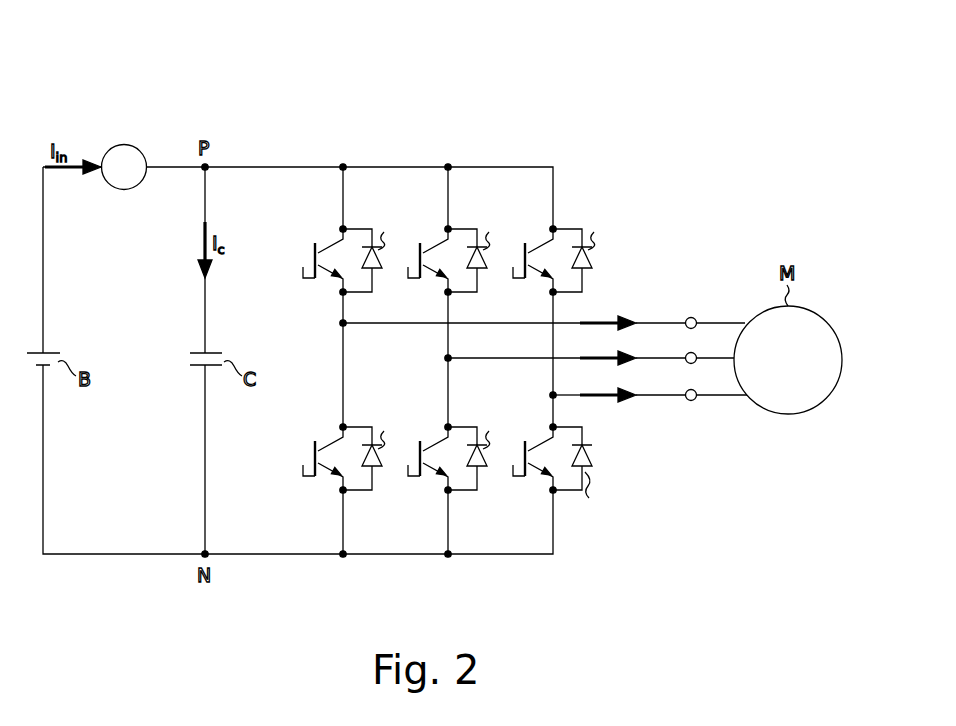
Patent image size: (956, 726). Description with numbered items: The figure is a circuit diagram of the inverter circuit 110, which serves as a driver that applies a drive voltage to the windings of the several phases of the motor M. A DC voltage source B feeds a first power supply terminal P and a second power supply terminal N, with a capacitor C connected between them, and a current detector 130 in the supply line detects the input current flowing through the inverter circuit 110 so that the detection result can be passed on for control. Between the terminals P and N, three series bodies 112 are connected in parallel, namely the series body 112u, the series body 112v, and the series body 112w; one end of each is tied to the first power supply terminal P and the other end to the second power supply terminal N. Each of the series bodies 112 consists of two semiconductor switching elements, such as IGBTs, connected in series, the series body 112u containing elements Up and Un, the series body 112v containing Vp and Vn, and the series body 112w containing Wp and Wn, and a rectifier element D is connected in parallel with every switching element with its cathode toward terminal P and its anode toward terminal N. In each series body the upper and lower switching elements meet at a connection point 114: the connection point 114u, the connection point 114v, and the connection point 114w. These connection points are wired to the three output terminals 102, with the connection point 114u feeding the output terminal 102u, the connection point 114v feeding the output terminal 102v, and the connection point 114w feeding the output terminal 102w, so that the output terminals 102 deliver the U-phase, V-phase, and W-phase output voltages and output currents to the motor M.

The inverter circuit 110 is at (574, 76).
The current detector 130 is at (124, 144).
The series bodies 112 is at (463, 194).
The series body 112u is at (346, 220).
The series body 112v is at (453, 222).
The series body 112w is at (558, 220).
The connection point 114 is at (469, 415).
The connection point 114u is at (340, 323).
The connection point 114v is at (447, 360).
The connection point 114w is at (558, 398).
The output terminals 102 is at (724, 370).
The output terminal 102u is at (691, 317).
The output terminal 102v is at (686, 364).
The output terminal 102w is at (696, 400).